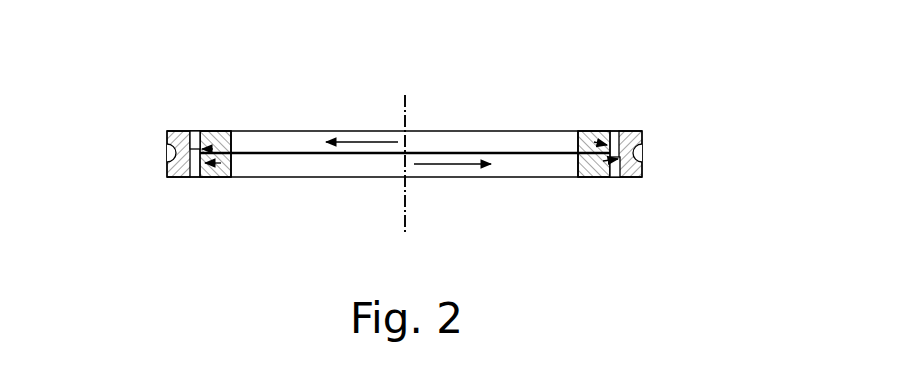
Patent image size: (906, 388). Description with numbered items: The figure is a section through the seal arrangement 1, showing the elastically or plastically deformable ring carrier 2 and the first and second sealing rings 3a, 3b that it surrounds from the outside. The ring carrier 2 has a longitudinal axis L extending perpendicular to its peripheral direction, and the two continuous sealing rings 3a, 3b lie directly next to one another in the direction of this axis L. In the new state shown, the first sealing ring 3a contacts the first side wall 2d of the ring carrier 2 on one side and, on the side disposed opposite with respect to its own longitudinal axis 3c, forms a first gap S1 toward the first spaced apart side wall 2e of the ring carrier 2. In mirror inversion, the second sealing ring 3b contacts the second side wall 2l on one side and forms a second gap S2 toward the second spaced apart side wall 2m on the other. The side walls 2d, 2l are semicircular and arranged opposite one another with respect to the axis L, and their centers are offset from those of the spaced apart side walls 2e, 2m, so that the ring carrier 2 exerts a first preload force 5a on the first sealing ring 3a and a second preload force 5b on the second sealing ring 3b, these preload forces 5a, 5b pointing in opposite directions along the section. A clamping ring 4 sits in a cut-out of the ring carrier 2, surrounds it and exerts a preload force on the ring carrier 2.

The seal arrangement 1 is at (661, 47).
The ring carrier 2 is at (178, 130).
The first side wall 2d is at (578, 130).
The first spaced apart side wall 2e is at (258, 130).
The second side wall 2l is at (230, 173).
The second spaced apart side wall 2m is at (588, 172).
The first sealing ring 3a is at (228, 130).
The second sealing ring 3b is at (203, 170).
The longitudinal axis of the first sealing ring 3c is at (405, 220).
The clamping ring 4 is at (167, 153).
The first preload force 5a is at (360, 142).
The second preload force 5b is at (463, 165).
The longitudinal axis L is at (406, 118).
The first gap S1 is at (193, 130).
The second gap S2 is at (613, 177).